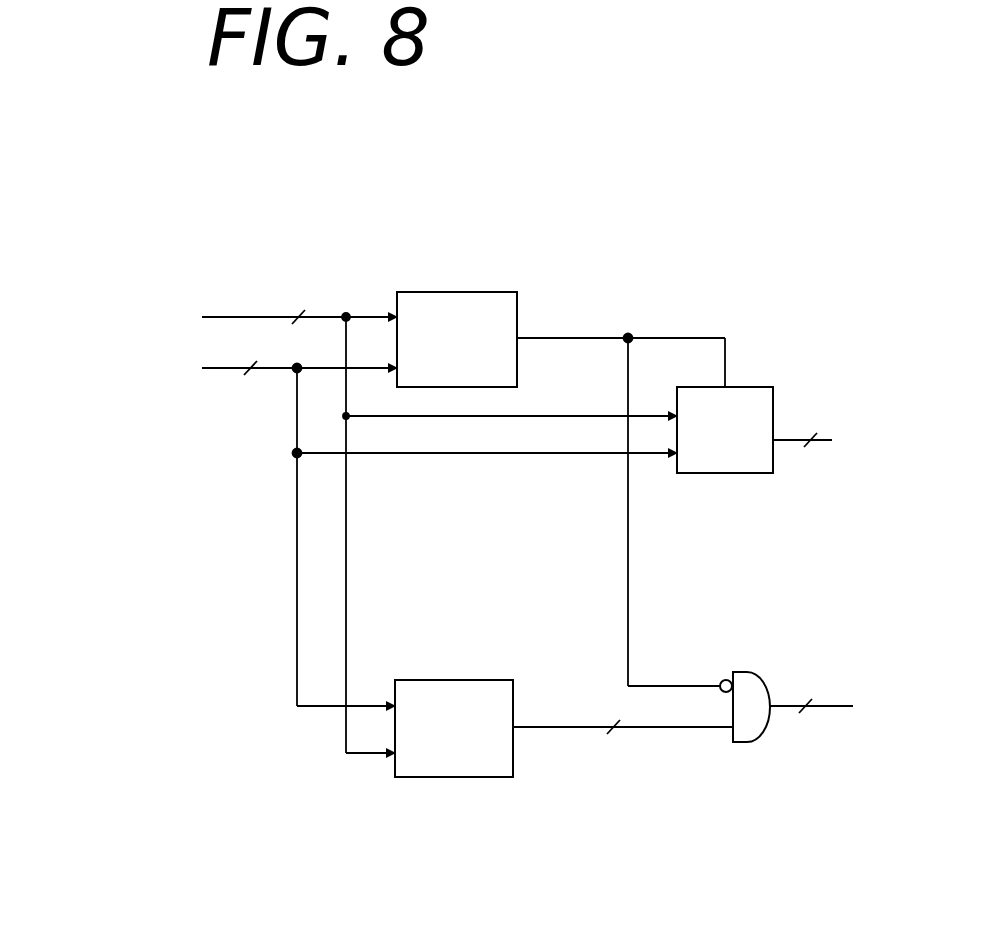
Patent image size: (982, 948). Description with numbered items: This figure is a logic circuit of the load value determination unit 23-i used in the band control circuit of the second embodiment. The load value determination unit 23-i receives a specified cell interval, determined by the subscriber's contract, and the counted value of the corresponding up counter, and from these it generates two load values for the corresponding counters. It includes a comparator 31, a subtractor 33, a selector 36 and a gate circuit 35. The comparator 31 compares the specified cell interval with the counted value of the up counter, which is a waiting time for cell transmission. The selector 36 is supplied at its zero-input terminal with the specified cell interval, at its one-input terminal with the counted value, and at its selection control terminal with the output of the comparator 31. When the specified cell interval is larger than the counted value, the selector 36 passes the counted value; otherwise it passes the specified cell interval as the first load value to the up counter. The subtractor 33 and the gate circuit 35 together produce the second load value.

The load value determination unit 23-i is at (300, 826).
The comparator 31 is at (497, 292).
The subtractor 33 is at (440, 680).
The gate circuit 35 is at (745, 672).
The selector 36 is at (767, 387).